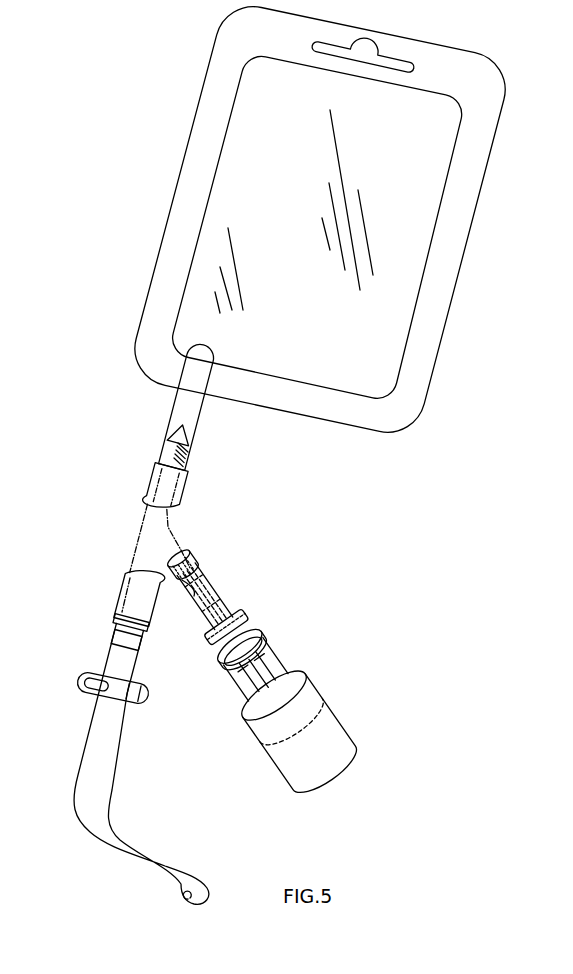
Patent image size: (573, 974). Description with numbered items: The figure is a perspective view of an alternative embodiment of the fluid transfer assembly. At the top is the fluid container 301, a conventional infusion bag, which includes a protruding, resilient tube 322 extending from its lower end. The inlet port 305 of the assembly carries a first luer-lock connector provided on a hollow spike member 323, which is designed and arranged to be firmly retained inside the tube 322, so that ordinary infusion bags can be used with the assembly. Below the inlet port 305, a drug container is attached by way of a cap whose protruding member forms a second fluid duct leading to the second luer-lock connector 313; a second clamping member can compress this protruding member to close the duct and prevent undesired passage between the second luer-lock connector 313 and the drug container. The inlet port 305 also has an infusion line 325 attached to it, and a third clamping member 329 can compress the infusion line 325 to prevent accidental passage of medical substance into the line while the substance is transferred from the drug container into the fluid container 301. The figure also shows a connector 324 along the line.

The fluid container 301 is at (176, 153).
The inlet port 305 is at (182, 535).
The second luer-lock connector 313 is at (186, 583).
The tube 322 is at (158, 445).
The hollow spike member 323 is at (190, 457).
The connector 324 is at (125, 574).
The infusion line 325 is at (101, 728).
The third clamping member 329 is at (85, 683).